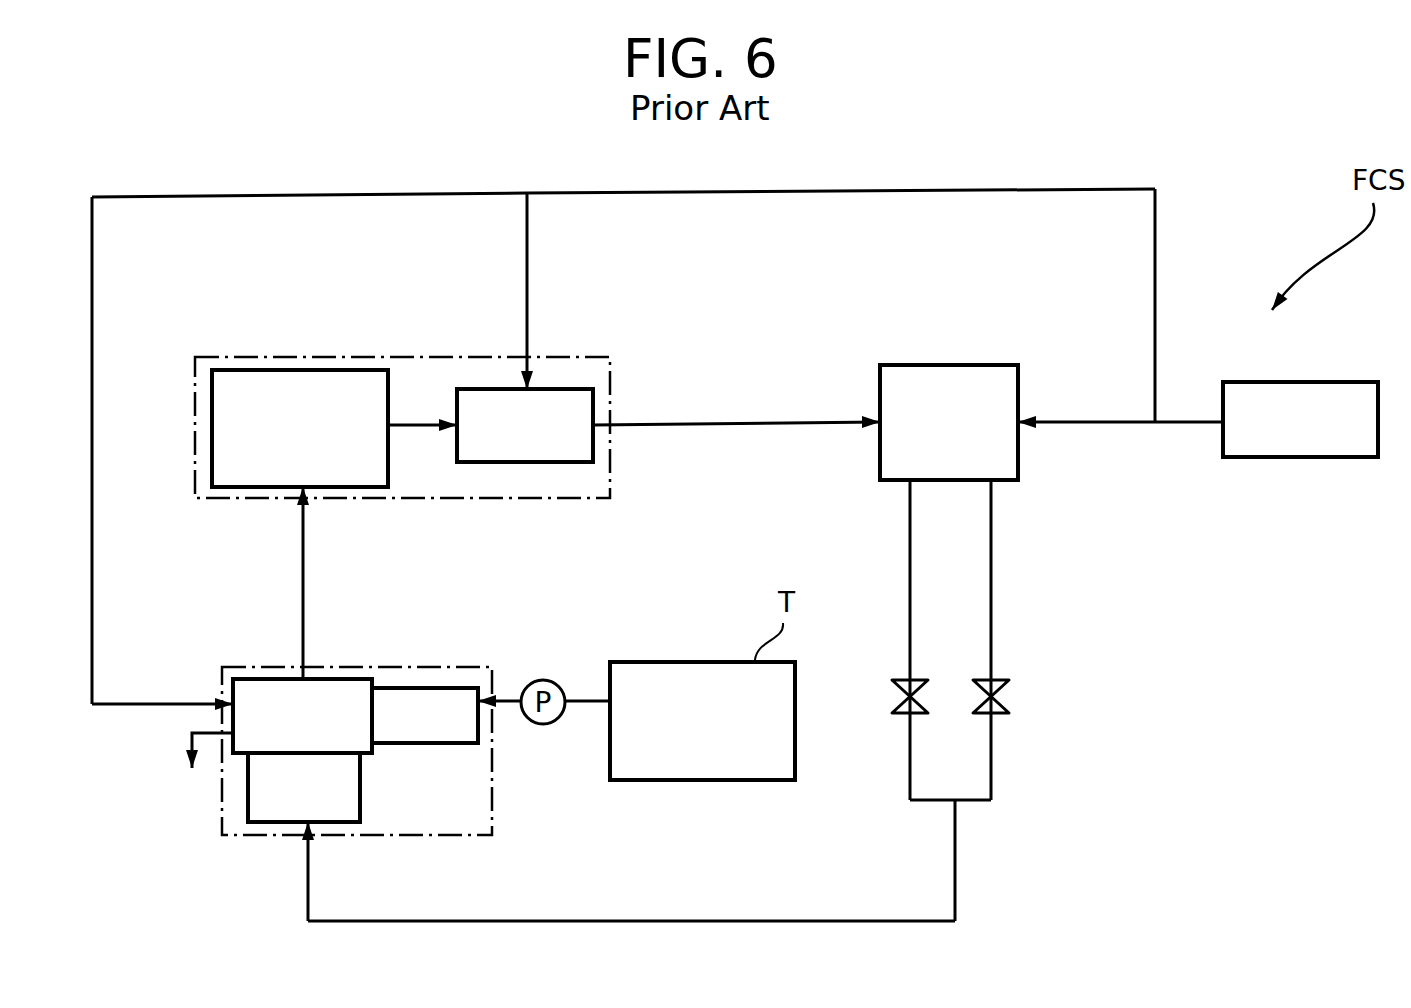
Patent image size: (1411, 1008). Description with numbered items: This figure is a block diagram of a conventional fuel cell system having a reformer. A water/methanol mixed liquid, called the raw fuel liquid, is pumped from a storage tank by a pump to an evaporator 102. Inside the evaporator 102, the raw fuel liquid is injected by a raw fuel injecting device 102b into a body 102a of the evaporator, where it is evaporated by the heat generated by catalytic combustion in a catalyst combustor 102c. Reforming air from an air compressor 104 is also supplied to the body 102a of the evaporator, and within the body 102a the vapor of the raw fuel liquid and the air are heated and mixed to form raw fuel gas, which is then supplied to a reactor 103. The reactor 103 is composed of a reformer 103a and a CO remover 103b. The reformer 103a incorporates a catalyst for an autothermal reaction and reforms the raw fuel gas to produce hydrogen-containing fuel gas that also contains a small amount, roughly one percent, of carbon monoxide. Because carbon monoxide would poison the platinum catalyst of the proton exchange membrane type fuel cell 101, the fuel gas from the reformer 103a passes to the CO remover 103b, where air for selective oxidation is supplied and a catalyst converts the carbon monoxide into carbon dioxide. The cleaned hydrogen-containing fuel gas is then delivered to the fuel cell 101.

The fuel cell 101 is at (985, 363).
The evaporator 102 is at (360, 665).
The body of the evaporator 102a is at (268, 679).
The raw fuel injecting device 102b is at (442, 688).
The catalyst combustor 102c is at (275, 825).
The reactor 103 is at (418, 357).
The reformer 103a is at (285, 370).
The CO remover 103b is at (558, 388).
The air compressor 104 is at (1343, 382).